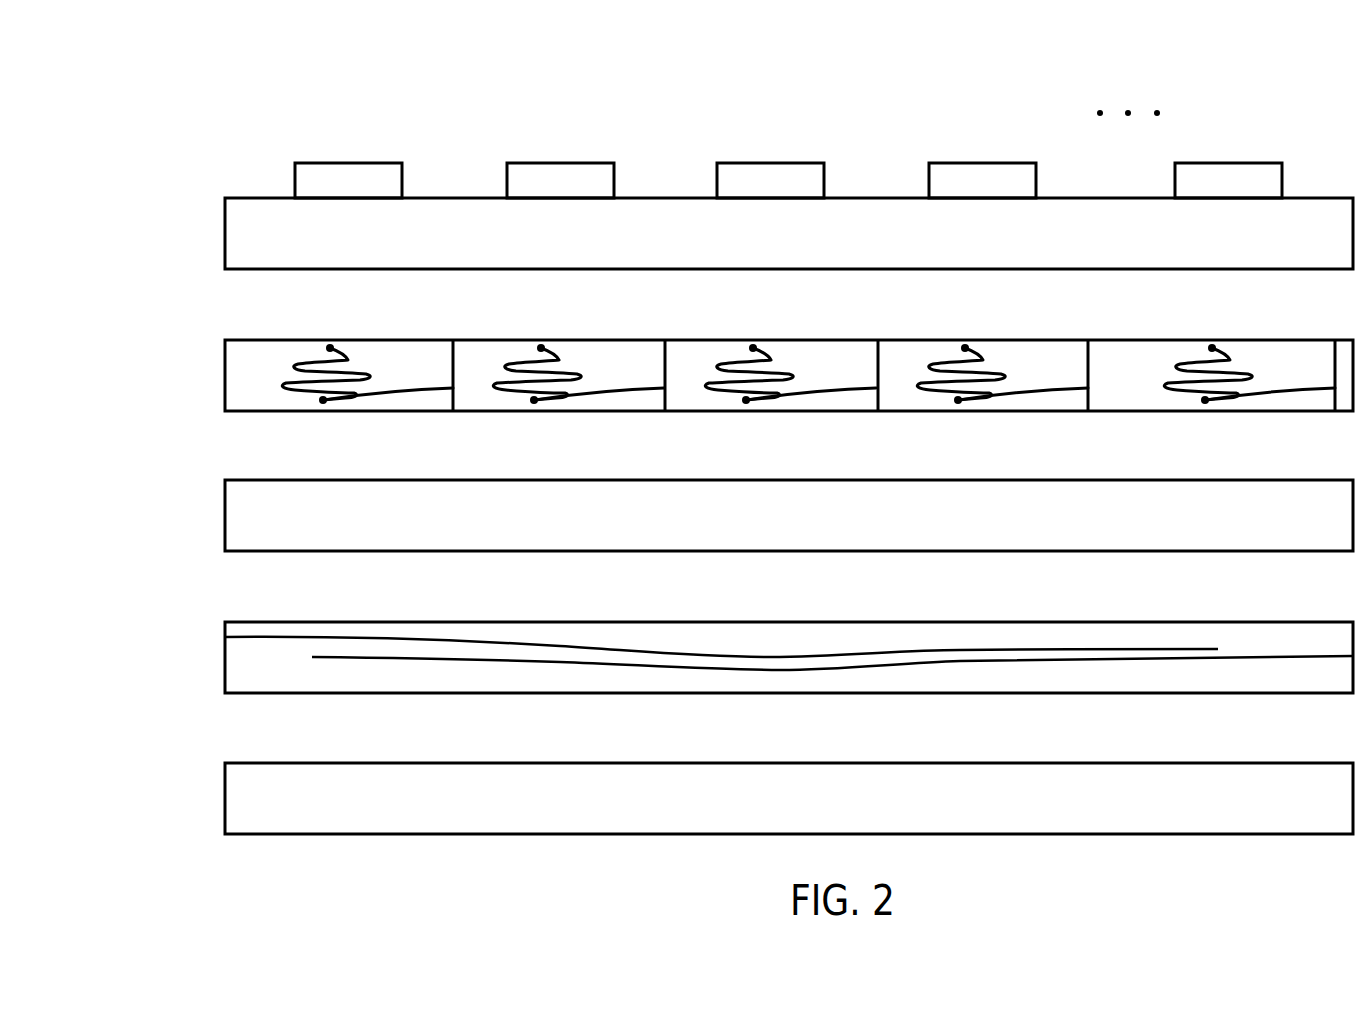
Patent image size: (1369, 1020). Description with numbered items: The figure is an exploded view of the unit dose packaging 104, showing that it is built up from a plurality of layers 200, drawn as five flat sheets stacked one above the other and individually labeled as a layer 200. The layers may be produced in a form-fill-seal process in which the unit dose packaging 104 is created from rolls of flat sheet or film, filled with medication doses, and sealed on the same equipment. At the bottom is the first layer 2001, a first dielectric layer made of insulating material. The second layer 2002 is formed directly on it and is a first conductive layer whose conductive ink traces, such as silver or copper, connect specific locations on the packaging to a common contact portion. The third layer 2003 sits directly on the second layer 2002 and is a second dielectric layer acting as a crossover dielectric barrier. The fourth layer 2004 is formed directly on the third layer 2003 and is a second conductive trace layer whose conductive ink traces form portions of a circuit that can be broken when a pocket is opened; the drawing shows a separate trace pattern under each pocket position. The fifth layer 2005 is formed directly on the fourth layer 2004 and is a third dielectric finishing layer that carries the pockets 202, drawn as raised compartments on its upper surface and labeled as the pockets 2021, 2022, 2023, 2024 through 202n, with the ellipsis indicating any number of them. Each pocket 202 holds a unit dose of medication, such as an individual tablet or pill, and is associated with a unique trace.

The unit dose packaging 104 is at (223, 60).
The layer 200 is at (734, 516).
The first layer 2001 is at (225, 798).
The second layer 2002 is at (225, 657).
The third layer 2003 is at (225, 515).
The fourth layer 2004 is at (225, 375).
The fifth layer 2005 is at (225, 233).
The pocket 202 is at (788, 152).
The first pocket 2021 is at (348, 163).
The second pocket 2022 is at (560, 163).
The third pocket 2023 is at (770, 163).
The fourth pocket 2024 is at (982, 163).
The nth pocket 202n is at (1228, 163).